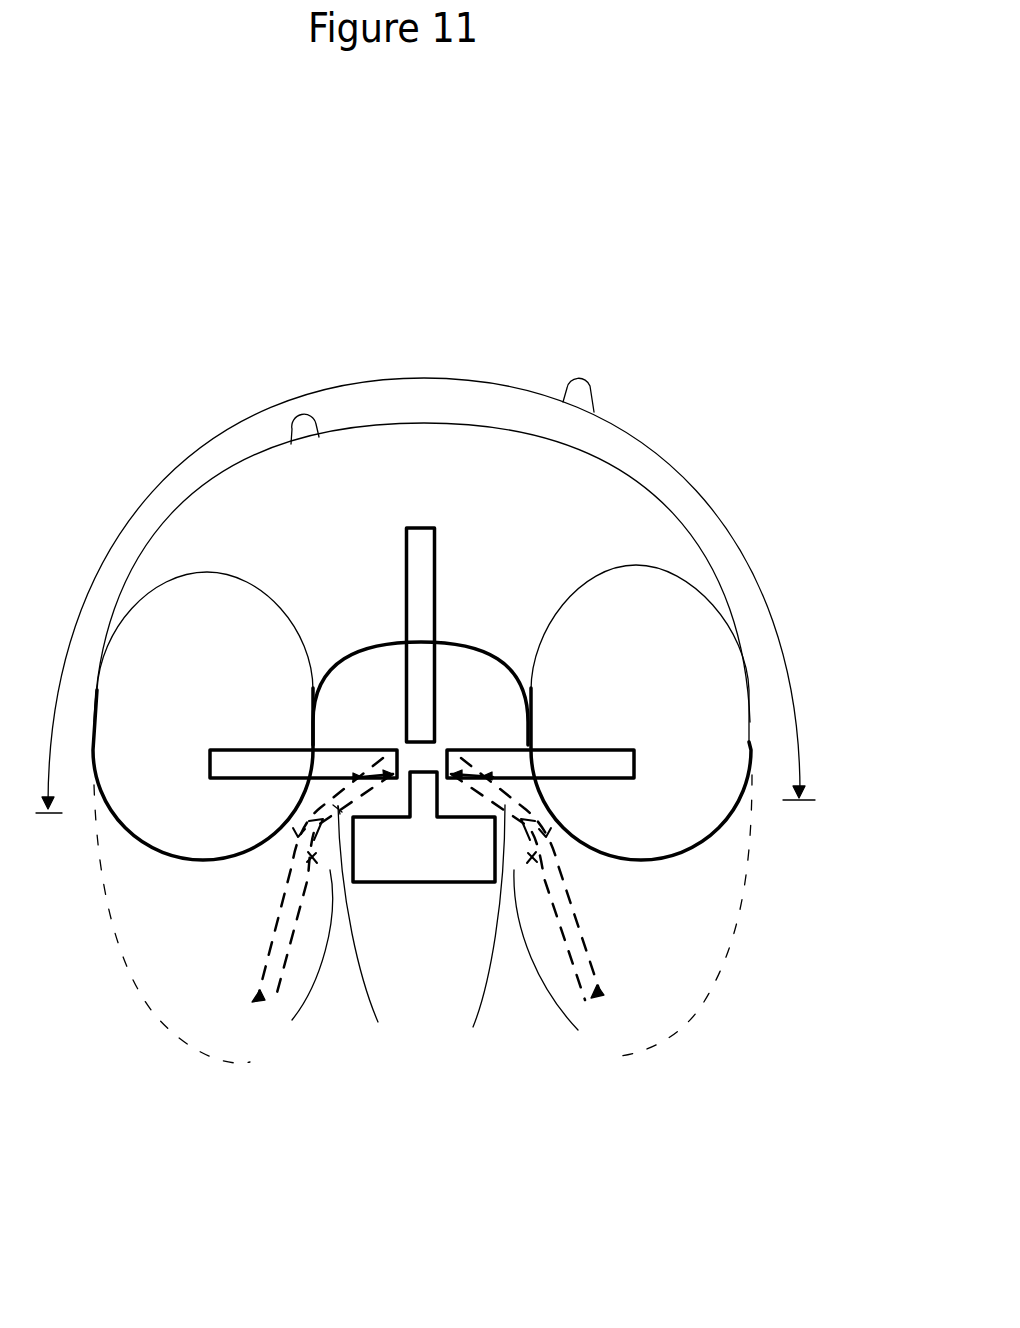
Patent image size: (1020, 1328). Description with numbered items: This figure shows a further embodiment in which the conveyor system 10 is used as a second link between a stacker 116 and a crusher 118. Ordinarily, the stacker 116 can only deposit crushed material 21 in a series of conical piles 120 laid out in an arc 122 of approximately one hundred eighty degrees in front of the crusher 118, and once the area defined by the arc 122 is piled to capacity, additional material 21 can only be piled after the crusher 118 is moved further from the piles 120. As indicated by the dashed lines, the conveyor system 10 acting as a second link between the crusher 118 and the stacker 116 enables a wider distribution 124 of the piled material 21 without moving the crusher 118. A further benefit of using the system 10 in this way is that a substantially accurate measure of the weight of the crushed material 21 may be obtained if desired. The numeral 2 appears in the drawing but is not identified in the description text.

The head outline 2 is at (711, 1001).
The conveyor system 10 is at (435, 935).
The crushed material 21 is at (552, 513).
The stacker 116 is at (433, 592).
The crusher 118 is at (423, 857).
The conical piles 120 is at (430, 478).
The arc 122 is at (642, 433).
The wider distribution 124 is at (210, 943).